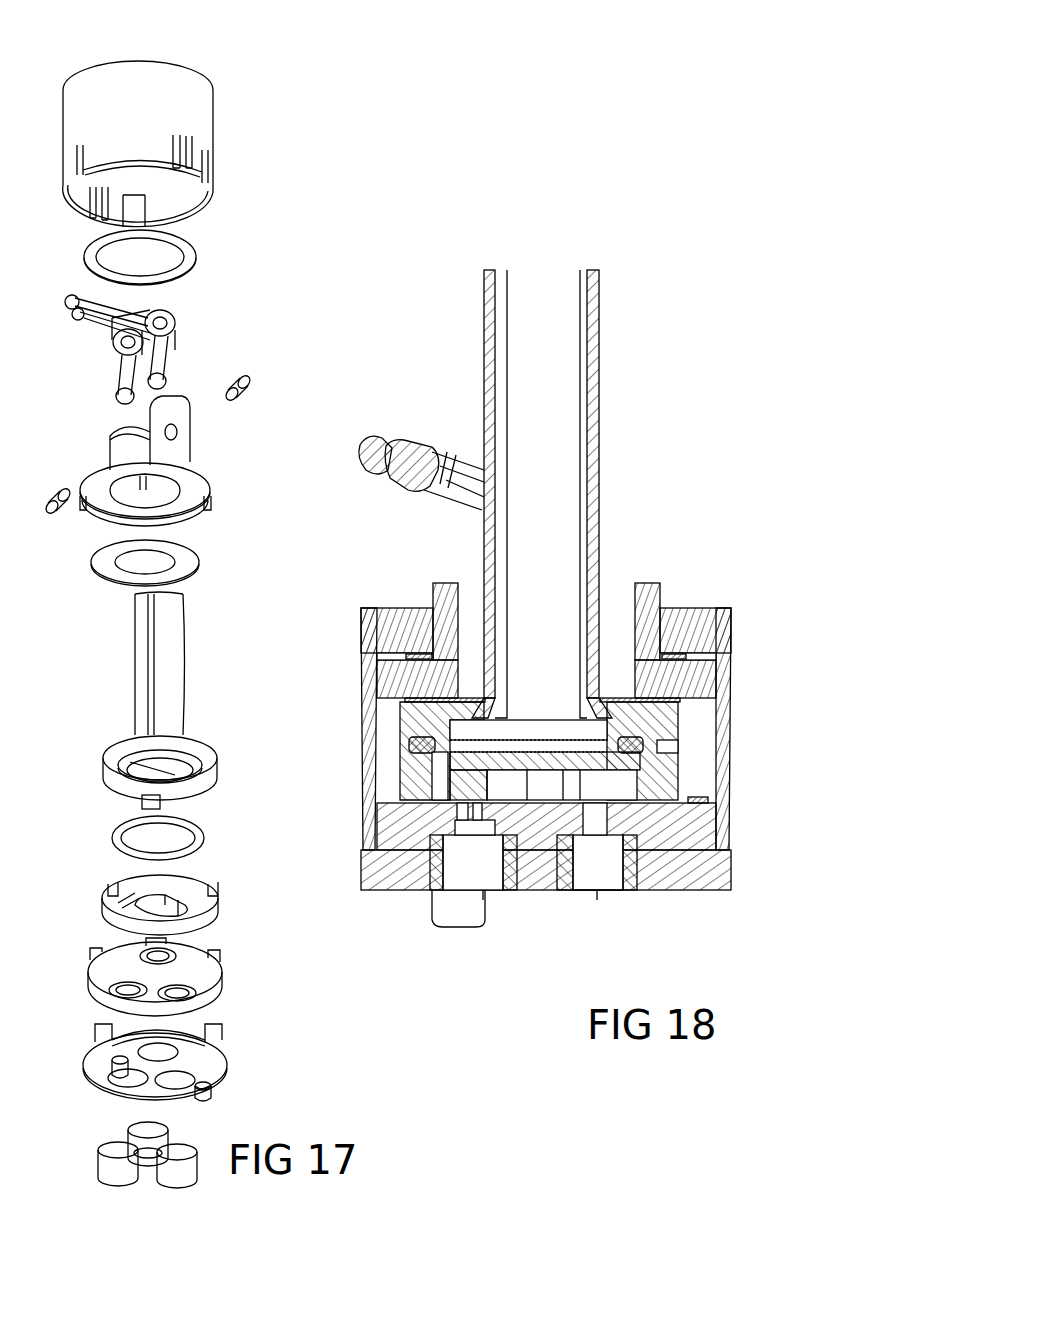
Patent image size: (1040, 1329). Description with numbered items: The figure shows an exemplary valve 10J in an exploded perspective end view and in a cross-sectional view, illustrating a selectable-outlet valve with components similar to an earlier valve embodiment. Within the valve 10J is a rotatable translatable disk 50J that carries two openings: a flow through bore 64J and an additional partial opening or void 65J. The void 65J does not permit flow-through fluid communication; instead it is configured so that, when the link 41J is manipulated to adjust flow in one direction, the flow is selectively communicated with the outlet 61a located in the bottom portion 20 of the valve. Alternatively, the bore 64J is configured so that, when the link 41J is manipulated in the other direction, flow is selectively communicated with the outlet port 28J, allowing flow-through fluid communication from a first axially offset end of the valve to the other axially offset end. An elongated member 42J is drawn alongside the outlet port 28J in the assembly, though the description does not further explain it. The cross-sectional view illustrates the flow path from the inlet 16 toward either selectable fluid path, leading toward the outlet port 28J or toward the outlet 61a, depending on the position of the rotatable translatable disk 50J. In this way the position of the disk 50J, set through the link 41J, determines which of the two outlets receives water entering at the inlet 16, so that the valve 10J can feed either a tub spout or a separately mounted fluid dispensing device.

In FIG. 17, the valve 10J is at (173, 44).
In FIG. 18, the valve 10J is at (632, 360).
In FIG. 17, the link 41J is at (175, 298).
In FIG. 17, the outlet port 28J is at (192, 580).
In FIG. 18, the outlet port 28J is at (532, 268).
In FIG. 17, the shaft sleeve 42J is at (130, 594).
In FIG. 18, the shaft sleeve 42J is at (510, 268).
In FIG. 17, the rotatable translatable disk 50J is at (190, 858).
In FIG. 18, the rotatable translatable disk 50J is at (668, 760).
In FIG. 17, the flow through bore 64J is at (122, 903).
In FIG. 18, the flow through bore 64J is at (440, 783).
In FIG. 17, the partial opening or void 65J is at (195, 915).
In FIG. 18, the partial opening or void 65J is at (628, 786).
In FIG. 17, the bottom portion 20 is at (232, 1060).
In FIG. 17, the outlet 61a is at (185, 1082).
In FIG. 18, the outlet 61a is at (598, 893).
In FIG. 18, the inlet 16 is at (450, 868).